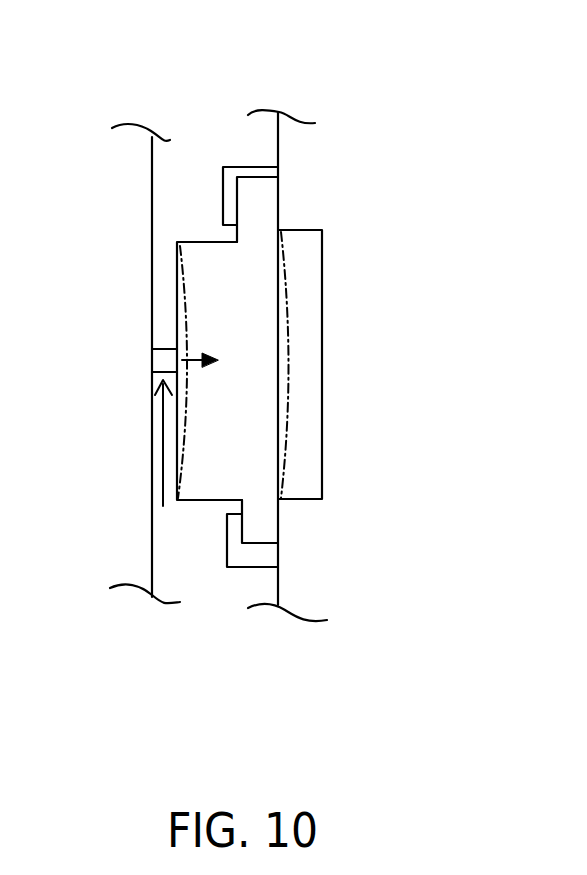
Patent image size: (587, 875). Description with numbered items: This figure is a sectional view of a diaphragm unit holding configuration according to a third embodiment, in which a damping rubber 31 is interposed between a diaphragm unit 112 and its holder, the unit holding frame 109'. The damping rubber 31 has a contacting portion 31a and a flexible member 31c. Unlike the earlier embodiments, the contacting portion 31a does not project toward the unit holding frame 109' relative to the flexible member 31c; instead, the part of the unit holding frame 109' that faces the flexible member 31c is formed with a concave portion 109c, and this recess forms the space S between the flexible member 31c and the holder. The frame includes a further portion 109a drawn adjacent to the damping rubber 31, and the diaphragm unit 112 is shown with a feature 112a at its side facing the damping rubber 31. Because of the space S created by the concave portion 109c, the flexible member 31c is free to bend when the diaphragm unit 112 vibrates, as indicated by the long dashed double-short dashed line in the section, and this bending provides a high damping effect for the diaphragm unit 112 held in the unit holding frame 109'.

The damping rubber 31 is at (200, 241).
The contacting portion 31a is at (247, 209).
The flexible member 31c is at (240, 402).
The rail / bracket of frame 109a is at (228, 163).
The concave portion 109c is at (318, 331).
The 3b-th unit holding frame 109' is at (334, 361).
The diaphragm unit 112 is at (133, 283).
The slot in plate 112a is at (159, 348).
The space S is at (315, 266).